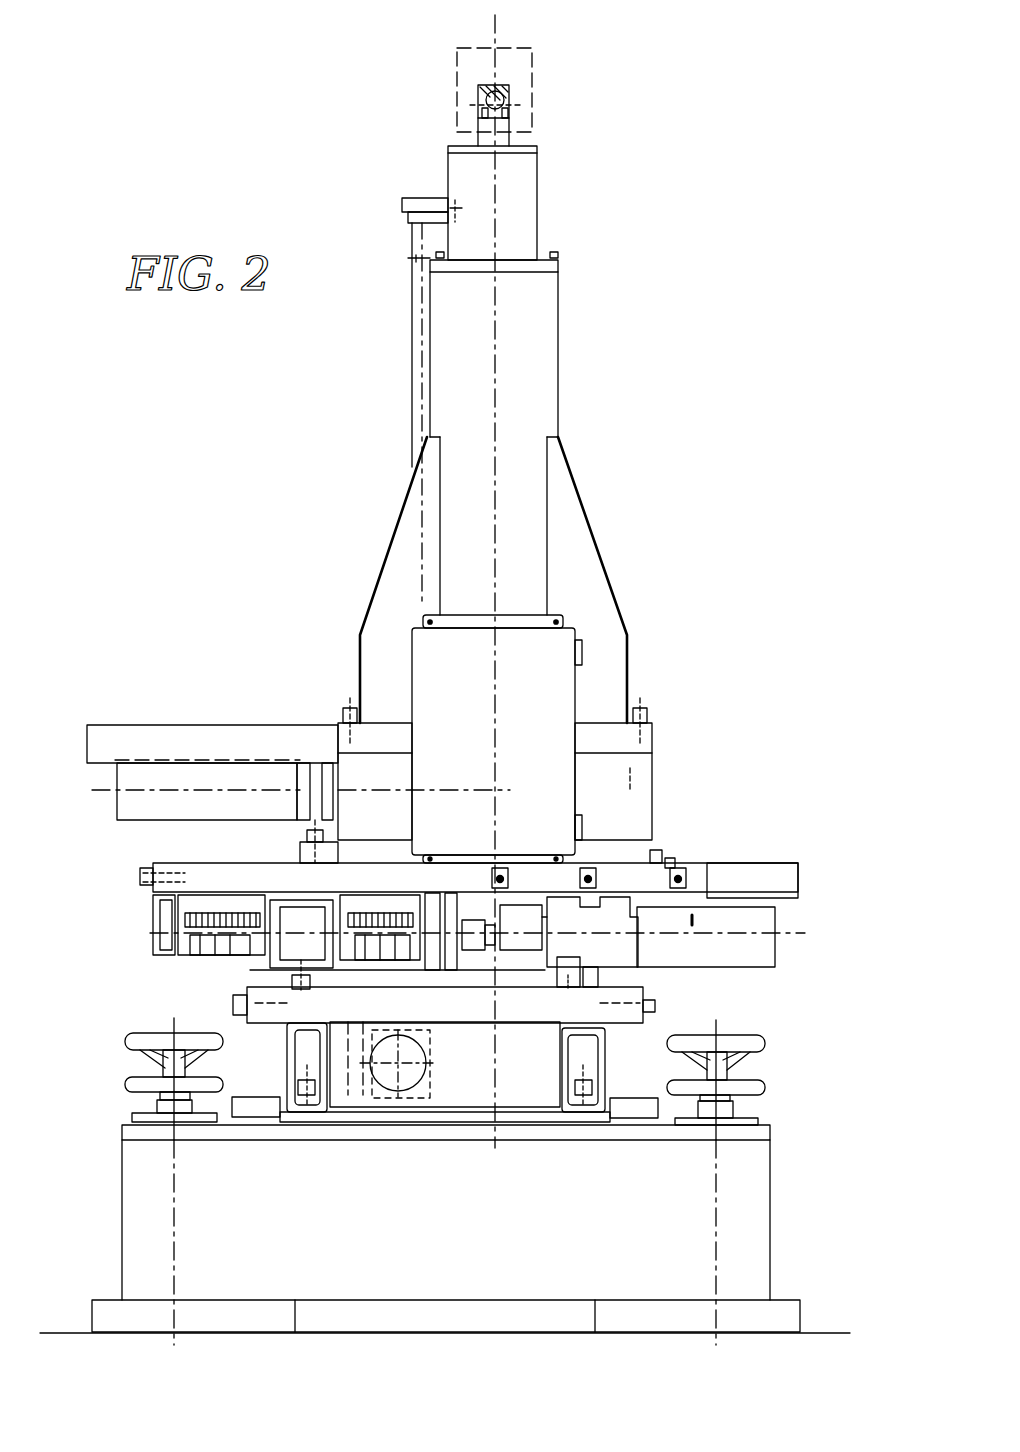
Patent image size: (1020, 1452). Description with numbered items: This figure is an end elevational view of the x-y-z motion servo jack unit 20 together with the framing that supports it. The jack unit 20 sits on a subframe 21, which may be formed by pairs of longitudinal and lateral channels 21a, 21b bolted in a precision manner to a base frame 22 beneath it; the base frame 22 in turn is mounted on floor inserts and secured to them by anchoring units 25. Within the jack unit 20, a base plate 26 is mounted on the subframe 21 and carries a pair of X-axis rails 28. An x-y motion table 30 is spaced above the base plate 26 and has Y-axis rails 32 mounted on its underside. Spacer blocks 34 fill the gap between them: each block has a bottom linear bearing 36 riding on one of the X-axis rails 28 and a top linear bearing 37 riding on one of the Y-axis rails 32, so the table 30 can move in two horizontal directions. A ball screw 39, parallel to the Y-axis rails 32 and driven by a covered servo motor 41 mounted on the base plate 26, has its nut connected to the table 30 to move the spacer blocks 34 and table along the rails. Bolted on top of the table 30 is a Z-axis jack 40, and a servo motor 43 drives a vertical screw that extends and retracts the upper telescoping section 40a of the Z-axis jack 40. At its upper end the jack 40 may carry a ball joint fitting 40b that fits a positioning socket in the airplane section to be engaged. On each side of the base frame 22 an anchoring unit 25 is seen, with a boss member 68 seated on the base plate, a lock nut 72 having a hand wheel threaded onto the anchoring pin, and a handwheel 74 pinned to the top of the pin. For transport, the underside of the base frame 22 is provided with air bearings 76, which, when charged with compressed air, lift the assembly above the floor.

The x-y-z motion servo jack unit 20 is at (392, 413).
The subframe 21 is at (606, 1071).
The longitudinal channels 21a is at (293, 1035).
The lateral channels 21b is at (520, 1095).
The base frame 22 is at (121, 1211).
The anchoring unit 25 is at (754, 1069).
The base plate 26 is at (508, 1010).
The X-axis rails 28 is at (585, 992).
The x-y motion table 30 is at (268, 876).
The Y-axis rails 32 is at (530, 893).
The spacer blocks 34 is at (625, 955).
The bottom linear bearing 36 is at (620, 980).
The top linear bearing 37 is at (608, 905).
The ball screw 39 is at (243, 945).
The Z-axis jack 40 is at (540, 364).
The upper telescoping section 40a is at (528, 196).
The ball joint fitting 40b is at (508, 96).
The servo motor 41 is at (765, 925).
The servo motor 43 is at (145, 808).
The boss member 68 is at (155, 1108).
The lock nut 72 is at (130, 1085).
The handwheel 74 is at (143, 1040).
The air bearings 76 is at (282, 1318).